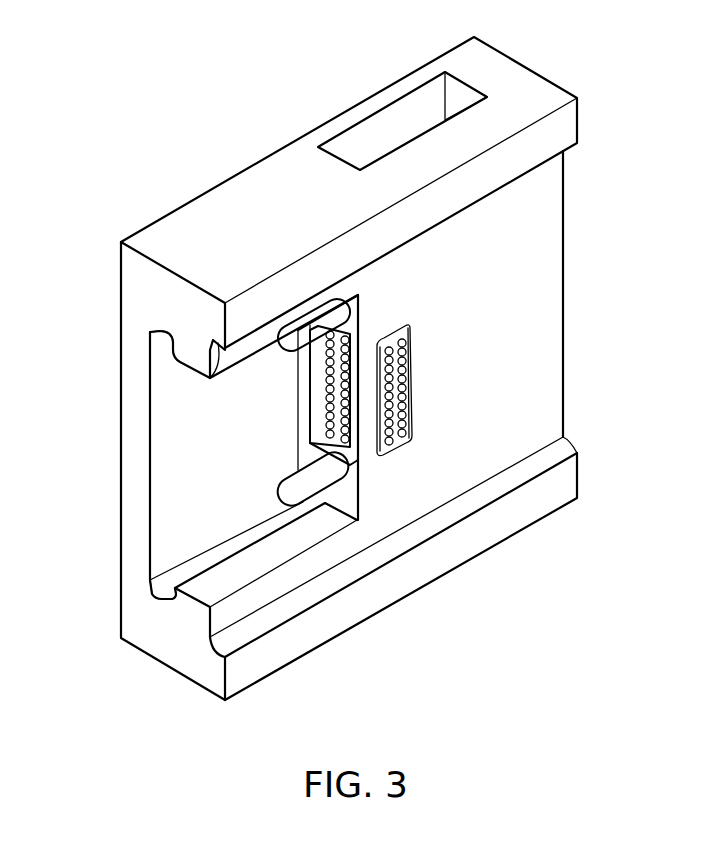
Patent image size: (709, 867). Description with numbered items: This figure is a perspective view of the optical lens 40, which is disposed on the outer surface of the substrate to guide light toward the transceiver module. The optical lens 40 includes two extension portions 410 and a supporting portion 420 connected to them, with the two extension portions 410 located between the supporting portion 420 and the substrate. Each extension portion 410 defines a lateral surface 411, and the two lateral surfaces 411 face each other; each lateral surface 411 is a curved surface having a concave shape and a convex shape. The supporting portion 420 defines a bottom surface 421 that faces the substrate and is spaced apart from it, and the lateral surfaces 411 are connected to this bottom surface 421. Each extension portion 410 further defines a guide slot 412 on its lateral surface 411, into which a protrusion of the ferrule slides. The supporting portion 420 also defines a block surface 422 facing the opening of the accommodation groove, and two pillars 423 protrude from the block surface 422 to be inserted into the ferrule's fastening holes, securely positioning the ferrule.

The optical lens 40 is at (125, 60).
The extension portion 410 is at (583, 118).
The lateral surface 411 is at (208, 372).
The guide slot 412 is at (148, 348).
The supporting portion 420 is at (531, 351).
The bottom surface 421 is at (180, 432).
The block surface 422 is at (352, 311).
The pillar 423 is at (312, 338).